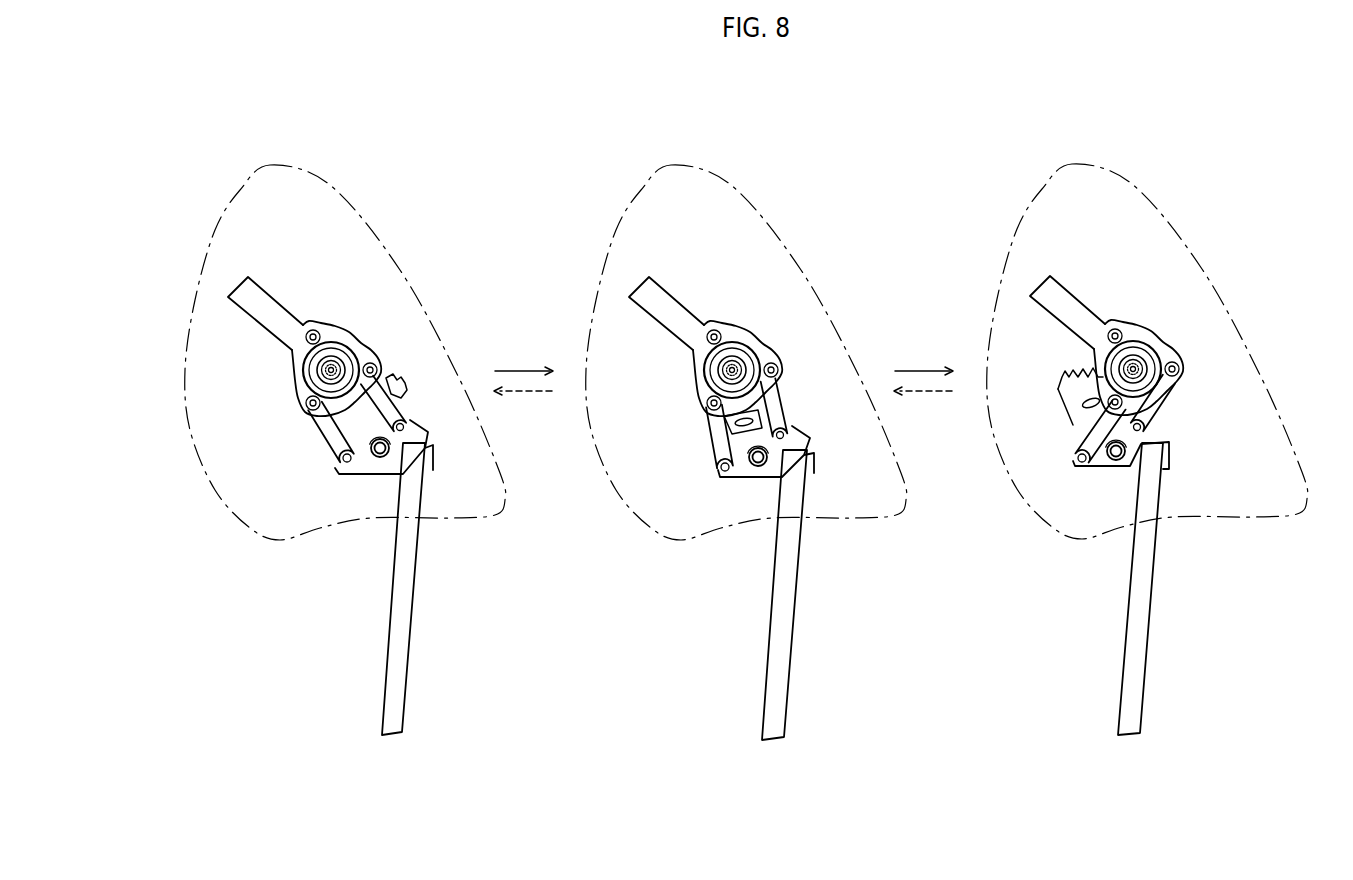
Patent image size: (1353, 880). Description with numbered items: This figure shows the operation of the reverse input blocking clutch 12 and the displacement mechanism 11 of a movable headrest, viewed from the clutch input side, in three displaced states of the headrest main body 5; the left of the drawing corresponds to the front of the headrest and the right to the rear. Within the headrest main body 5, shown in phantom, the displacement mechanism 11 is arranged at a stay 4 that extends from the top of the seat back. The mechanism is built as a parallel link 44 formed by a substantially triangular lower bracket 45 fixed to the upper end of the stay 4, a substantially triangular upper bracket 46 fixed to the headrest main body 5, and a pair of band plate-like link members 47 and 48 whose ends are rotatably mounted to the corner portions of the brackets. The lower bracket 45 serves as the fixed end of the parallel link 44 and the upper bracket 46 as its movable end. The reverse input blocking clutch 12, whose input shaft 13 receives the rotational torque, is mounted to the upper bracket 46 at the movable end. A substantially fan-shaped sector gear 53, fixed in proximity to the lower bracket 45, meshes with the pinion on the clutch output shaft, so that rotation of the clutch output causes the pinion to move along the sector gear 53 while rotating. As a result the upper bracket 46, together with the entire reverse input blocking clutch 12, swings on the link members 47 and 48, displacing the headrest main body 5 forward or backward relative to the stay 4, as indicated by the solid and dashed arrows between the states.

The stay 4 is at (405, 629).
The headrest main body 5 is at (394, 258).
The displacement mechanism 11 is at (289, 269).
The reverse input blocking clutch 12 is at (347, 334).
The input shaft 13 is at (316, 371).
The parallel links 44 is at (302, 433).
The lower bracket 45 is at (392, 470).
The upper bracket 46 is at (358, 343).
The link member 47 is at (333, 444).
The link member 48 is at (399, 409).
The sector gear 53 is at (394, 378).